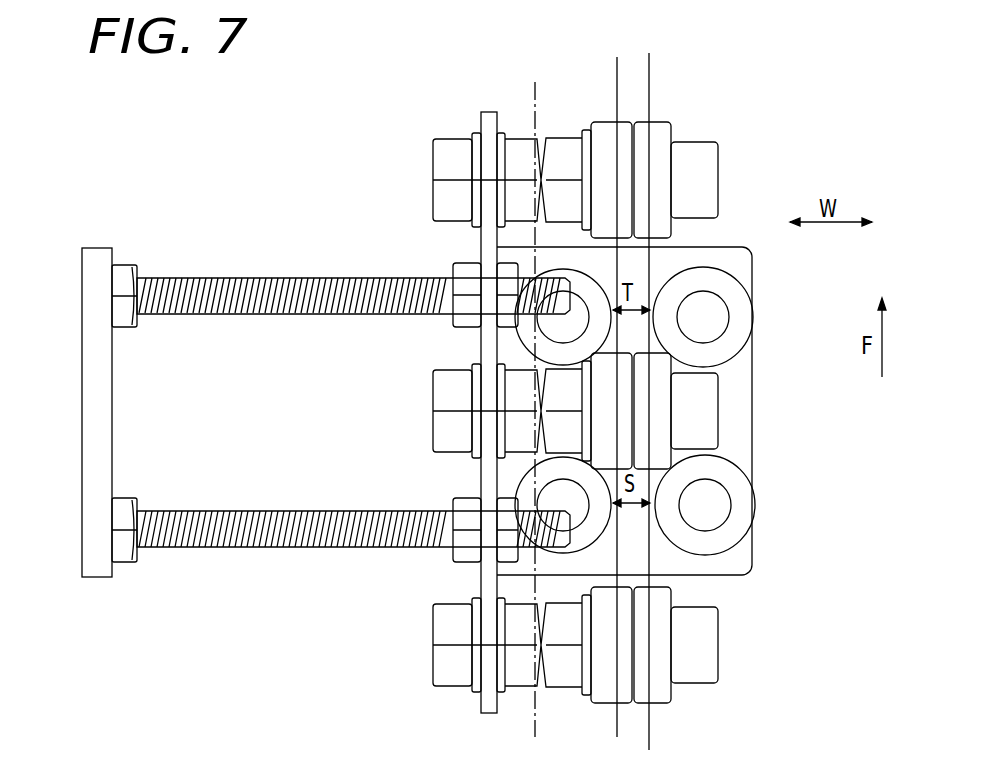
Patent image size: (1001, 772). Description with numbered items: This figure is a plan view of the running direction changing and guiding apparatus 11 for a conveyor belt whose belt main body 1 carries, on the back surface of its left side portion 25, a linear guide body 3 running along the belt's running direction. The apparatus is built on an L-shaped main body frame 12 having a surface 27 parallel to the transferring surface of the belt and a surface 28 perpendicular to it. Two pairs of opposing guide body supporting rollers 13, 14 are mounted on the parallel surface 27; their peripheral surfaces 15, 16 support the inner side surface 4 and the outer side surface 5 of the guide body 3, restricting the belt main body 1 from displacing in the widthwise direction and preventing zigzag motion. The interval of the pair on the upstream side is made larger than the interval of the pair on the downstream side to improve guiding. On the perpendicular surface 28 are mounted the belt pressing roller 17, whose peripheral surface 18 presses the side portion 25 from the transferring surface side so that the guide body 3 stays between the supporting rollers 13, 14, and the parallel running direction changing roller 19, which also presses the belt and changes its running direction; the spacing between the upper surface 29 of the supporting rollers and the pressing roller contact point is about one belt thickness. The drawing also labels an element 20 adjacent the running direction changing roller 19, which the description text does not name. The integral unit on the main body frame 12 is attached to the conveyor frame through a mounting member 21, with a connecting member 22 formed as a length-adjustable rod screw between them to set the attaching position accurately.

The belt main body 1 is at (575, 108).
The guide body 3 is at (628, 722).
The inner side surface 4 is at (650, 557).
The outer side surface 5 is at (617, 563).
The running direction changing and guiding apparatus 11 is at (305, 163).
The main body frame 12 is at (478, 160).
The guide body supporting roller 13 is at (735, 328).
The guide body supporting roller 14 is at (526, 327).
The peripheral surface 15 is at (742, 285).
The peripheral surface 16 is at (547, 352).
The belt pressing roller 17 is at (662, 392).
The peripheral surface 18 is at (662, 477).
The running direction changing roller 19 is at (662, 138).
The roller 20 is at (658, 122).
The mounting member 21 is at (97, 255).
The connecting member 22 is at (230, 285).
The left side portion 25 is at (545, 708).
The surface parallel to the transferring surface 27 is at (713, 257).
The surface perpendicular to the transferring surface 28 is at (485, 118).
The upper surface 29 is at (710, 300).